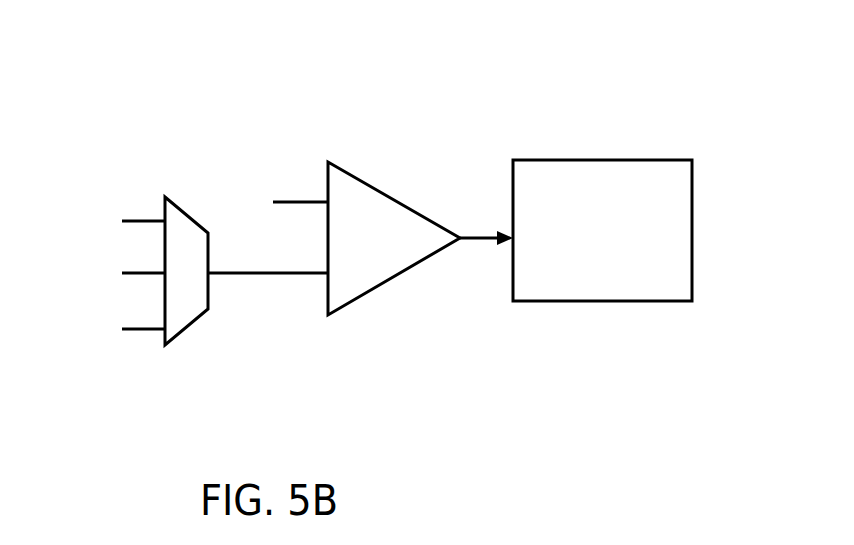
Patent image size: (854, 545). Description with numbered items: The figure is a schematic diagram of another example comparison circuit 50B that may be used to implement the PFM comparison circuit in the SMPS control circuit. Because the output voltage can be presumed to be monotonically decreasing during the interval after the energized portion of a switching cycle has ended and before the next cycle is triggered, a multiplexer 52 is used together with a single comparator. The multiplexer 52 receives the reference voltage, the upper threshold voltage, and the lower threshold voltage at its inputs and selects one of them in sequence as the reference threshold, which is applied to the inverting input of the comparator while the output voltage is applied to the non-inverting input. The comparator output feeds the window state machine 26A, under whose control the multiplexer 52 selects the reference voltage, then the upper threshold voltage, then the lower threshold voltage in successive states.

The comparison circuit 50B is at (480, 79).
The multiplexer 52 is at (186, 212).
The window state machine 26A is at (584, 158).